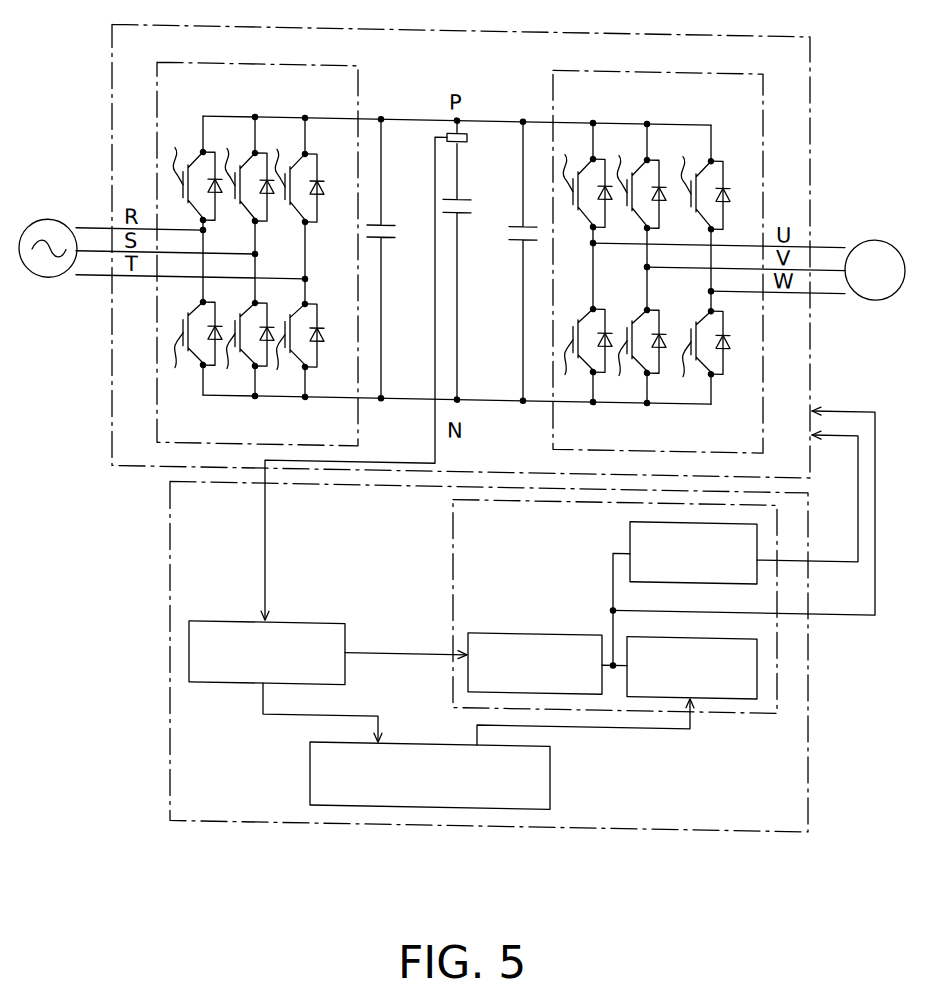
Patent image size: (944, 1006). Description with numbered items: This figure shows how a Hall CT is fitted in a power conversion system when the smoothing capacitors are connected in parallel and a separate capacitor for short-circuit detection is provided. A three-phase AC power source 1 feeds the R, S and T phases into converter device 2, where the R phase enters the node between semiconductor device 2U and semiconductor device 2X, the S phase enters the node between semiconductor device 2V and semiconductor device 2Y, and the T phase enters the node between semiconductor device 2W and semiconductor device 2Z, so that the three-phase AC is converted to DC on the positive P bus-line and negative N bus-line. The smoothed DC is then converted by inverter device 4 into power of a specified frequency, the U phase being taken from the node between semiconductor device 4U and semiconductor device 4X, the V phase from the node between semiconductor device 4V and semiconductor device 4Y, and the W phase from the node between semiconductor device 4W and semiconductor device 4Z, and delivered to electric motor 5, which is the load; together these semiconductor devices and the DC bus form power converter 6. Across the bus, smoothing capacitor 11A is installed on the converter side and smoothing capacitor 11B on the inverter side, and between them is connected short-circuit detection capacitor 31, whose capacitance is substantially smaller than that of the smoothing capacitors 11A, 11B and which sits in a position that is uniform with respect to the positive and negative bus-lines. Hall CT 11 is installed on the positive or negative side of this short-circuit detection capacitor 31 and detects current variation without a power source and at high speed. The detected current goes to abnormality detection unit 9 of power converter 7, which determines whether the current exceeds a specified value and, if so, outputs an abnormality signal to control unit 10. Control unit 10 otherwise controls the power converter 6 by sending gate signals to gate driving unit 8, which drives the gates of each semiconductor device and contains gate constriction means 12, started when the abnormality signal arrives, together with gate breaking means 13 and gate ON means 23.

The 3-phase AC power source 1 is at (58, 222).
The converter device 2 is at (287, 63).
The semiconductor device 2U is at (192, 170).
The semiconductor device 2V is at (244, 171).
The semiconductor device 2W is at (293, 172).
The semiconductor device 2X is at (192, 348).
The semiconductor device 2Y is at (244, 349).
The semiconductor device 2Z is at (293, 350).
The inverter device 4 is at (690, 70).
The semiconductor device 4U is at (585, 180).
The semiconductor device 4V is at (639, 181).
The semiconductor device 4W is at (696, 182).
The semiconductor device 4X is at (584, 355).
The semiconductor device 4Y is at (638, 356).
The semiconductor device 4Z is at (701, 357).
The electric motor 5 is at (882, 230).
The power converter 6 is at (812, 72).
The power converter 7 is at (810, 797).
The gate driving unit 8 is at (452, 518).
The abnormality detection unit 9 is at (198, 684).
The control unit 10 is at (551, 762).
The Hall CT 11 is at (469, 133).
The smoothing capacitor 11A is at (400, 226).
The smoothing capacitor 11B is at (502, 226).
The gate constriction means 12 is at (492, 628).
The gate breaking means 13 is at (738, 692).
The gate ON means 23 is at (630, 530).
The short-circuit detection capacitor 31 is at (476, 208).